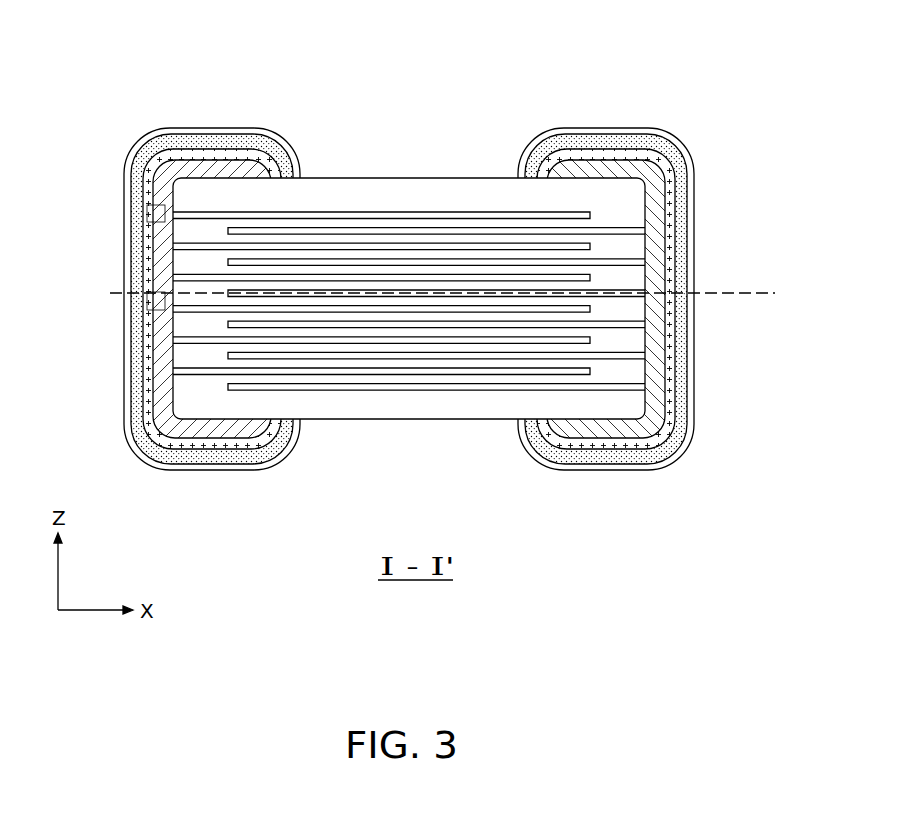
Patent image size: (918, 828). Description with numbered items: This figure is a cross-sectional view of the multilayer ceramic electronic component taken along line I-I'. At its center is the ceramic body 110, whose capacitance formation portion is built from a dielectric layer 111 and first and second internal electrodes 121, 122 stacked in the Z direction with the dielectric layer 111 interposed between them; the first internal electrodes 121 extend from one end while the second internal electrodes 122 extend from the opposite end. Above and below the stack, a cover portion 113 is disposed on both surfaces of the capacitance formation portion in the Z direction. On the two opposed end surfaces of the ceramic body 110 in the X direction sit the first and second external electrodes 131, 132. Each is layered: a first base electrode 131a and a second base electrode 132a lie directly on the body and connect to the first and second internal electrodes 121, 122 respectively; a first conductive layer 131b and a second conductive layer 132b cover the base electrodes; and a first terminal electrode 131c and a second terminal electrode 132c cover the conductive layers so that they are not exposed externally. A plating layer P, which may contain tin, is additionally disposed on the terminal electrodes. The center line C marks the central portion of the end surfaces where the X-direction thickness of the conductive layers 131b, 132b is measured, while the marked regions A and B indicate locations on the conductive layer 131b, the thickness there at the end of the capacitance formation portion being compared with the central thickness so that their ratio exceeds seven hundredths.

The ceramic body 110 is at (385, 178).
The dielectric layer 111 is at (190, 238).
The cover portion 113 is at (458, 188).
The first internal electrode 121 is at (295, 212).
The second internal electrode 122 is at (243, 228).
The first external electrode 131 is at (176, 245).
The first base electrode 131a is at (212, 249).
The first conductive layer 131b is at (150, 173).
The first terminal electrode 131c is at (132, 172).
The second external electrode 132 is at (642, 245).
The second base electrode 132a is at (606, 249).
The second conductive layer 132b is at (655, 158).
The second terminal electrode 132c is at (686, 160).
The plating layer P is at (124, 178).
The region A is at (130, 217).
The region B is at (130, 303).
The center line C is at (757, 292).